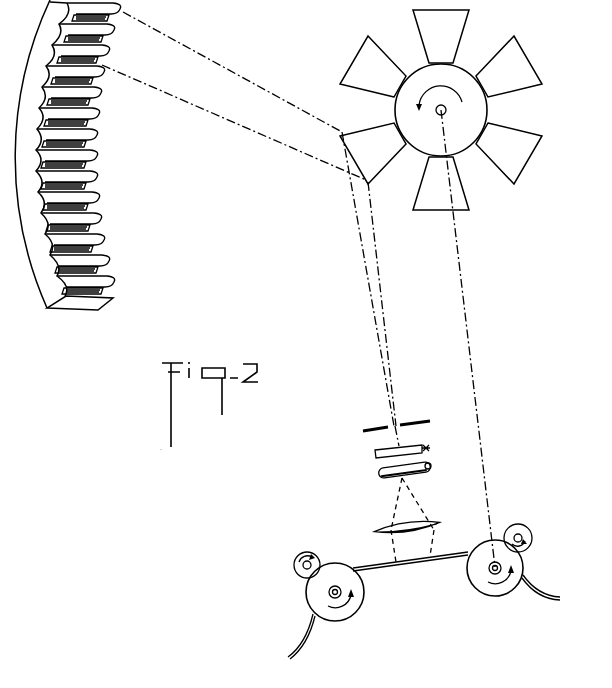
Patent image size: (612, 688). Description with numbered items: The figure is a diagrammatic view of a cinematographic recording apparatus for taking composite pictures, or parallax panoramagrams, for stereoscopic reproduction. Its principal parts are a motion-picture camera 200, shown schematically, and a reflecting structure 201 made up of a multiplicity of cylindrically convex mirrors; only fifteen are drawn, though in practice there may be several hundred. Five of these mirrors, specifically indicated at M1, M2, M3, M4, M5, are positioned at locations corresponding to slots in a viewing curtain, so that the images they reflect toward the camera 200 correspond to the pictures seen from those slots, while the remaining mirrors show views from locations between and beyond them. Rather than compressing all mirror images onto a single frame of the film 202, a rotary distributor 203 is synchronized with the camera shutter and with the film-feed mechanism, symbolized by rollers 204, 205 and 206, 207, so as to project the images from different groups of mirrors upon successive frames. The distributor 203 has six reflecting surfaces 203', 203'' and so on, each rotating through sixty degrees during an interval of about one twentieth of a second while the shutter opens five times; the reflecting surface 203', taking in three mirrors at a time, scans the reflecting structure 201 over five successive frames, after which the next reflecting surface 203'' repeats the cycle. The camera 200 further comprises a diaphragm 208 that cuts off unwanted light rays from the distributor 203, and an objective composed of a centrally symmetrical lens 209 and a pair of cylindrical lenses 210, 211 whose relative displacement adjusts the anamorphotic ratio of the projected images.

The motion-picture camera 200 is at (338, 510).
The reflecting structure 201 is at (80, 168).
The mirror M1 is at (115, 38).
The mirror M2 is at (100, 93).
The mirror M3 is at (90, 150).
The mirror M4 is at (97, 212).
The mirror M5 is at (111, 268).
The film 202 is at (447, 560).
The rotary distributor 203 is at (456, 111).
The reflecting surface 203' is at (359, 167).
The reflecting surface 203'' is at (354, 66).
The roller 204 is at (488, 592).
The roller 205 is at (533, 535).
The roller 206 is at (332, 620).
The roller 207 is at (297, 575).
The diaphragm 208 is at (416, 420).
The centrally symmetrical lens 209 is at (433, 513).
The cylindrical lens 210 is at (430, 448).
The cylindrical lens 211 is at (431, 466).